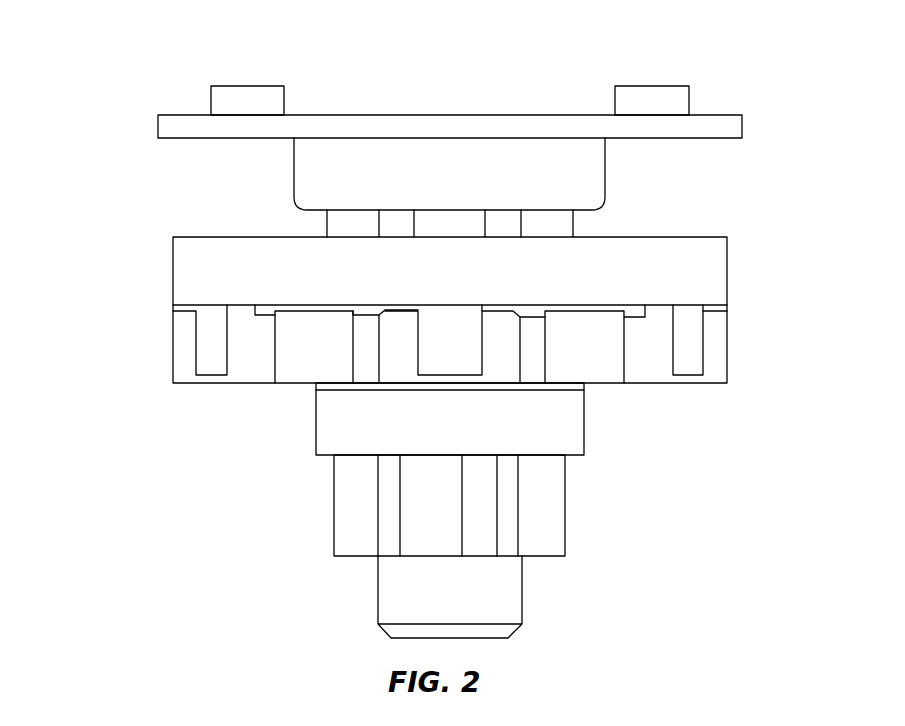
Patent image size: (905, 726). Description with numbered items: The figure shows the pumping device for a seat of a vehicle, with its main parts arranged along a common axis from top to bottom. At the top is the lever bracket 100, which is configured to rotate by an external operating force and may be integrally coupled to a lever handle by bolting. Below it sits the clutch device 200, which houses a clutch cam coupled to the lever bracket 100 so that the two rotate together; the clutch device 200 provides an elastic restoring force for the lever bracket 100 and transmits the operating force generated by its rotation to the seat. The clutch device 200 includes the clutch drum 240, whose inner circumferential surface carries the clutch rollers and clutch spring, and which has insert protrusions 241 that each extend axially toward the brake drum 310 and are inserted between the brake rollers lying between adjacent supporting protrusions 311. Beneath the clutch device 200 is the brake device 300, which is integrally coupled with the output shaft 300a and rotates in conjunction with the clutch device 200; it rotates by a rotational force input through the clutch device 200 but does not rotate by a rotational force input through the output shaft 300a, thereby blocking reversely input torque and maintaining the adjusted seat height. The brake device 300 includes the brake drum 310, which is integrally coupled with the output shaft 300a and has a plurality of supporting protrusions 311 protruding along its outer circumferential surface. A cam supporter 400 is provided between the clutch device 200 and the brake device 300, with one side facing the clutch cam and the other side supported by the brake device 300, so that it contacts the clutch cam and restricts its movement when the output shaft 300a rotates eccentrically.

The lever bracket 100 is at (457, 170).
The clutch device 200 is at (433, 301).
The clutch drum 240 is at (708, 265).
The insert protrusions 241 is at (690, 338).
The brake device 300 is at (286, 384).
The output shaft 300a is at (546, 510).
The brake drum 310 is at (598, 362).
The supporting protrusions 311 is at (397, 358).
The cam supporter 400 is at (368, 311).